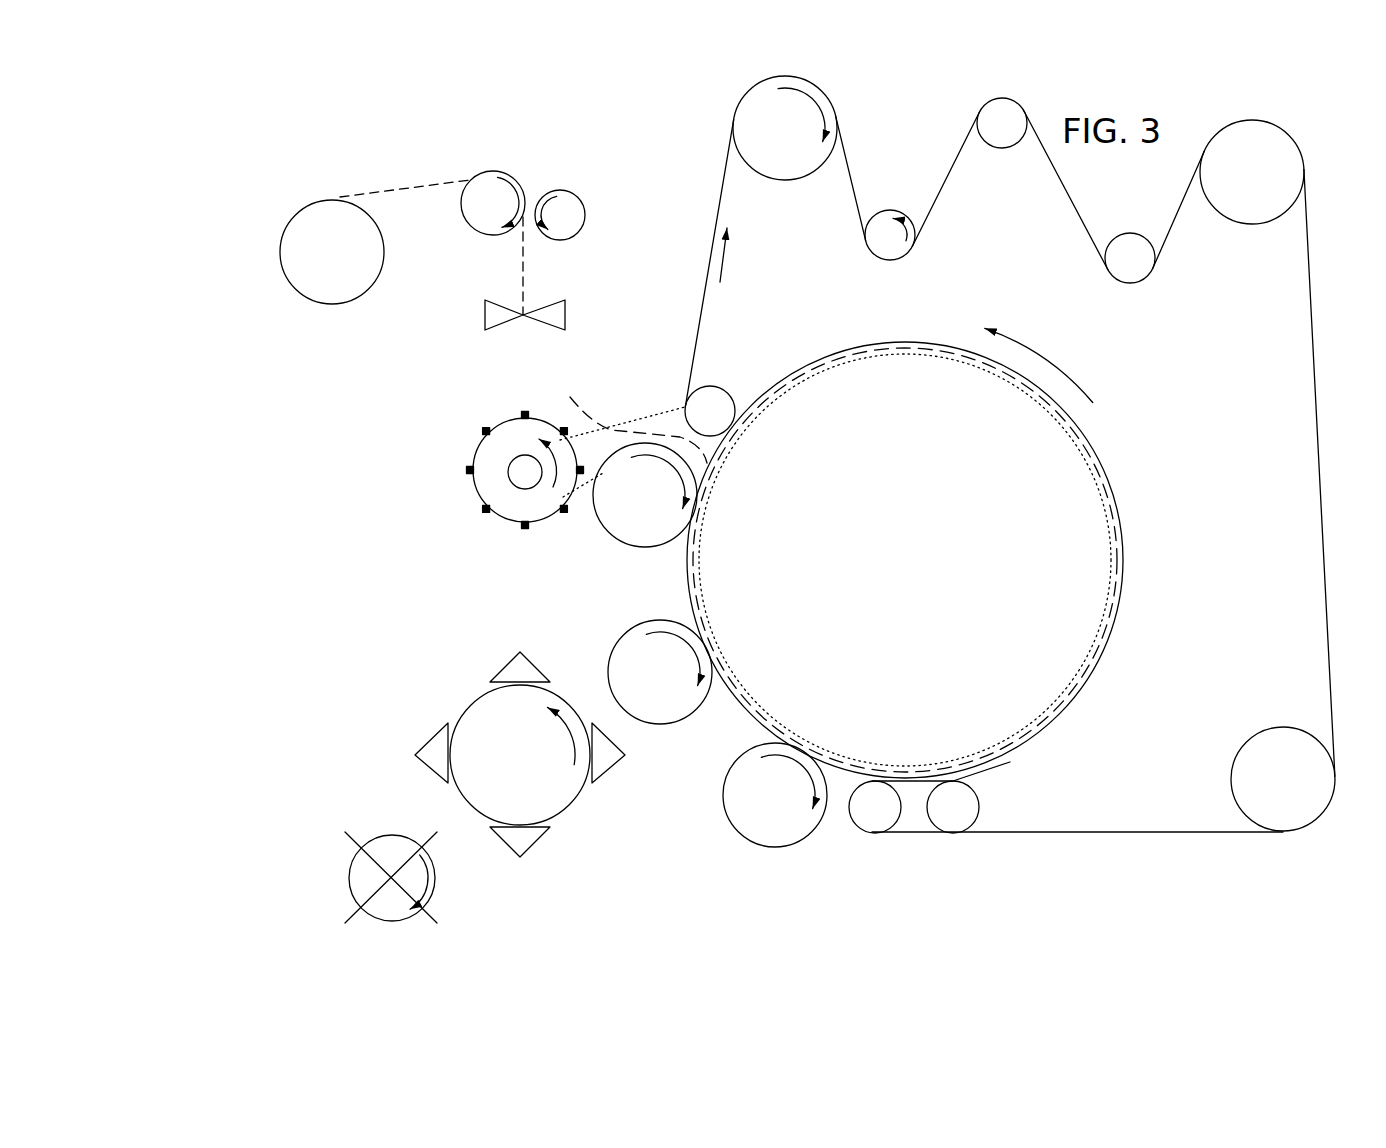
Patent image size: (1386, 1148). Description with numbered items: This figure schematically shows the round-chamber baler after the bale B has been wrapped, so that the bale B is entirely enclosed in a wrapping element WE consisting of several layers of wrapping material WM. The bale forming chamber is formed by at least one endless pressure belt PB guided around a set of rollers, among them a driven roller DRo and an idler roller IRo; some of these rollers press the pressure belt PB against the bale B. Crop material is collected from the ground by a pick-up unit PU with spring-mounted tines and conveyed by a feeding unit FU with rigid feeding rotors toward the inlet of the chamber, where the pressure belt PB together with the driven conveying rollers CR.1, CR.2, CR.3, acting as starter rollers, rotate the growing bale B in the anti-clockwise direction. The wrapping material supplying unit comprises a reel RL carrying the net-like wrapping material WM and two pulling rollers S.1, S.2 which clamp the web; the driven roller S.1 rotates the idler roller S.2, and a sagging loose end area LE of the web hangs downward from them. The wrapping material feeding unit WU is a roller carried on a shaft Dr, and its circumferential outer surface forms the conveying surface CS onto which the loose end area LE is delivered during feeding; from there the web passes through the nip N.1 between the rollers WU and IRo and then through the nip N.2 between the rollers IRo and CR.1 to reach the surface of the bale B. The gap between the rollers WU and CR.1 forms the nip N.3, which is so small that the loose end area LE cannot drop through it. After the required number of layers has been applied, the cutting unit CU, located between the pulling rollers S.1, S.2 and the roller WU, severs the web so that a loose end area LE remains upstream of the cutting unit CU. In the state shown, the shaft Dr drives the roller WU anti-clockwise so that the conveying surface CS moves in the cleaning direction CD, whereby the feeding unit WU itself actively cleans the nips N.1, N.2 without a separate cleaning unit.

The reel RL is at (318, 273).
The wrapping material WM is at (378, 187).
The driven pulling roller S.1 is at (493, 195).
The idler pulling roller S.2 is at (565, 203).
The loose end area LE is at (521, 290).
The cutting unit CU is at (551, 310).
The wrapping material feeding unit WU is at (488, 483).
The conveying surface CS is at (477, 438).
The cleaning direction CD is at (530, 440).
The driven shaft Dr is at (518, 476).
The first conveying roller CR.1 is at (645, 512).
The second conveying roller CR.2 is at (643, 680).
The third conveying roller CR.3 is at (760, 822).
The first nip N.1 is at (667, 407).
The second nip N.2 is at (704, 443).
The third nip N.3 is at (587, 487).
The idler roller IRo is at (717, 400).
The bale B is at (1060, 633).
The wrapping element WE is at (1101, 469).
The driven roller DRo is at (827, 95).
The pressure belt PB is at (1324, 622).
The feeding unit FU is at (505, 732).
The pick-up unit PU is at (397, 847).